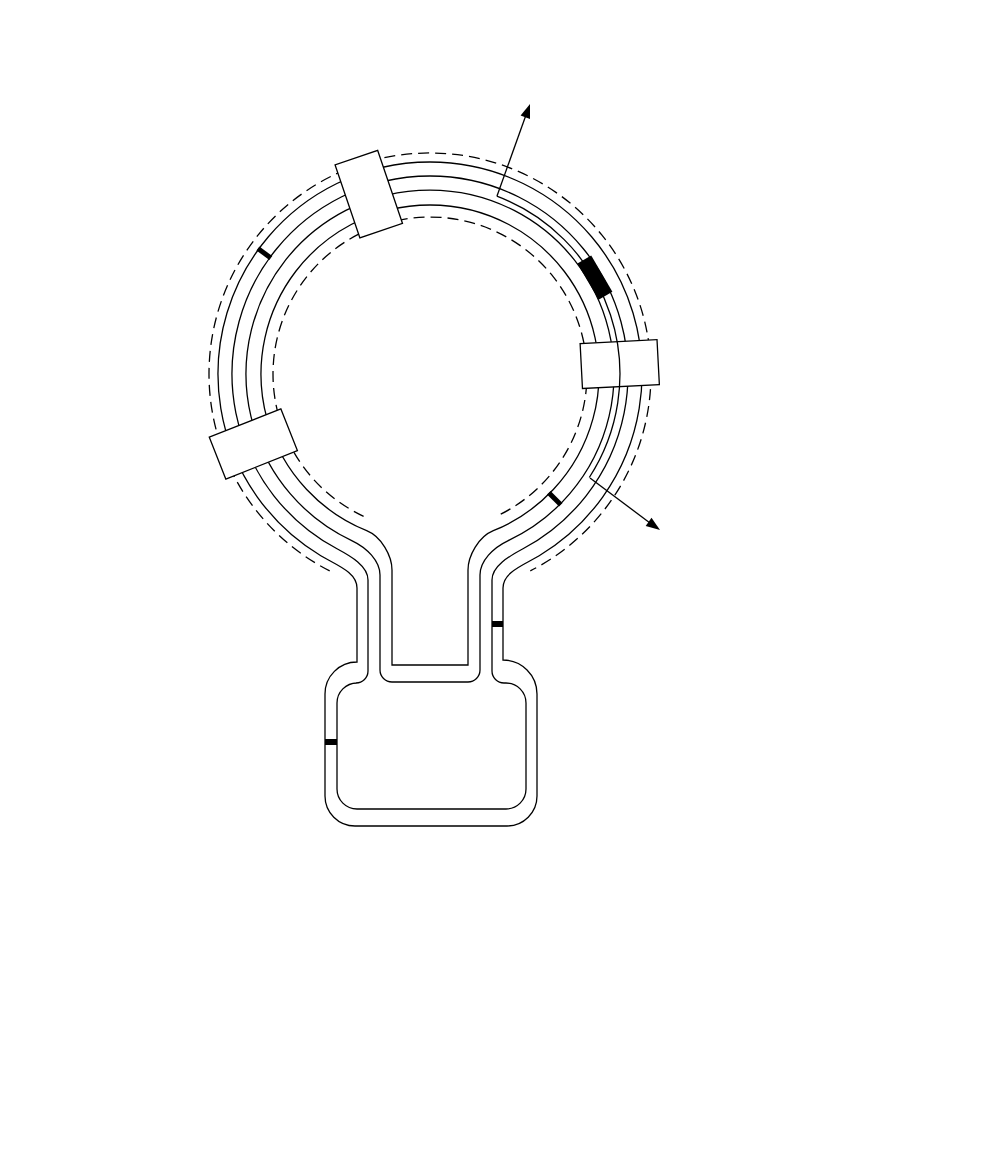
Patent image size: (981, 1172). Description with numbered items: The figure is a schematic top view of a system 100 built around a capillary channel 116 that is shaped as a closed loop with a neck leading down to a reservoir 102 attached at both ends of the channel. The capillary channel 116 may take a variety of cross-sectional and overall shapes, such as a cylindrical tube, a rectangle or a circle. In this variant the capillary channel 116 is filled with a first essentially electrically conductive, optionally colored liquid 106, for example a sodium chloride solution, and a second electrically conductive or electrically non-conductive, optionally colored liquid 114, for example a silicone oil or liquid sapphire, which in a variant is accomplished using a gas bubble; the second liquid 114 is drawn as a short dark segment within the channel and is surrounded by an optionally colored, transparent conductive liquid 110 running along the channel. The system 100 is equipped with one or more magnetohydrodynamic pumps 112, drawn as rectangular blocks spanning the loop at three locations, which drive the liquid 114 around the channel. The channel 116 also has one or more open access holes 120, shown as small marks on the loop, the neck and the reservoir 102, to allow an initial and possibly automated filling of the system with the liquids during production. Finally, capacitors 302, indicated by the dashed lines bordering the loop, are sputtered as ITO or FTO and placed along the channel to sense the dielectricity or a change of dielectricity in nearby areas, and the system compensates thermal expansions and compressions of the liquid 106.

The system 100 is at (195, 104).
The reservoir 102 is at (338, 820).
The first electrically conductive liquid 106 is at (275, 487).
The transparent conductive liquid 110 is at (543, 529).
The magnetohydrodynamic pump 112 is at (365, 160).
The second liquid 114 is at (600, 277).
The capillary channel 116 is at (295, 520).
The open access hole 120 is at (262, 250).
The capacitor 302 is at (285, 192).